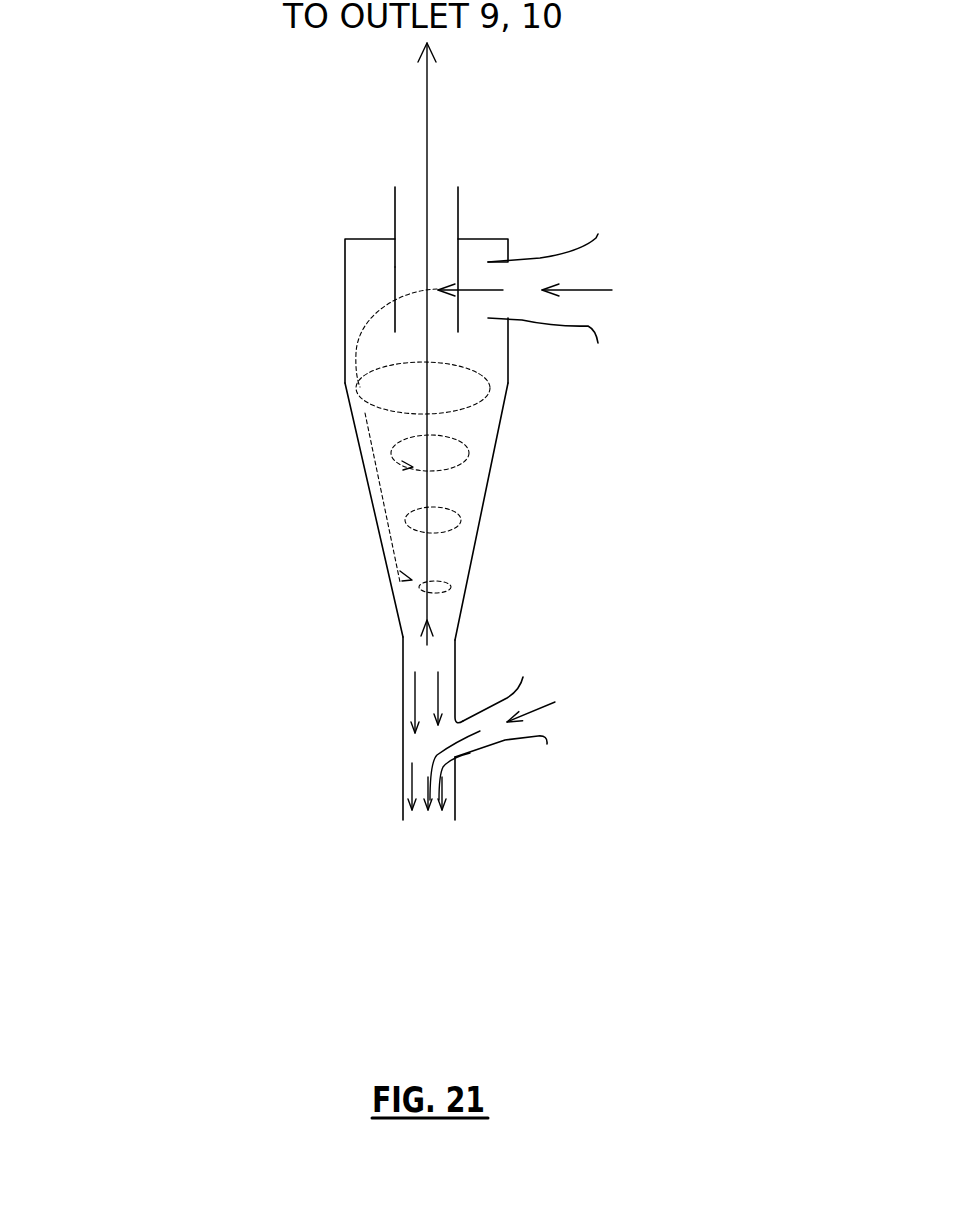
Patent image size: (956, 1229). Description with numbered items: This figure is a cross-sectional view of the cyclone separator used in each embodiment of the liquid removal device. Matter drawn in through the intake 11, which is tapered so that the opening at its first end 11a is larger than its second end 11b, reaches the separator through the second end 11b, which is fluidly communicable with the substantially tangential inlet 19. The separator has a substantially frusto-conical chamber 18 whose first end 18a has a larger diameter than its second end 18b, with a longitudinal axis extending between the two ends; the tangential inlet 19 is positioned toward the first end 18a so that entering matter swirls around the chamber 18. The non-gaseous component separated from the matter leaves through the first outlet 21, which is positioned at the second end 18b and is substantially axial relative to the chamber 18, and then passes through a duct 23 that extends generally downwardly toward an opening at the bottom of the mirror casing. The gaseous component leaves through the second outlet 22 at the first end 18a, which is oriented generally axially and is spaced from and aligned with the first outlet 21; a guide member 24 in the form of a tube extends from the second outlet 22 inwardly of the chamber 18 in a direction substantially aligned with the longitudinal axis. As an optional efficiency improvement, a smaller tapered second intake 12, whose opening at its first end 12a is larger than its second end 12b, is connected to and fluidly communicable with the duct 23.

The intake 11 is at (535, 272).
The first end of the intake 11a is at (592, 326).
The second end of the intake 11b is at (522, 320).
The second intake 12 is at (545, 745).
The first end of the second intake 12a is at (522, 692).
The second end of the second intake 12b is at (470, 753).
The chamber 18 is at (347, 412).
The first end of the chamber 18a is at (345, 250).
The second end of the chamber 18b is at (397, 634).
The substantially tangential inlet 19 is at (495, 262).
The first outlet 21 is at (410, 635).
The second outlet 22 is at (395, 212).
The duct 23 is at (402, 791).
The guide member 24 is at (395, 267).